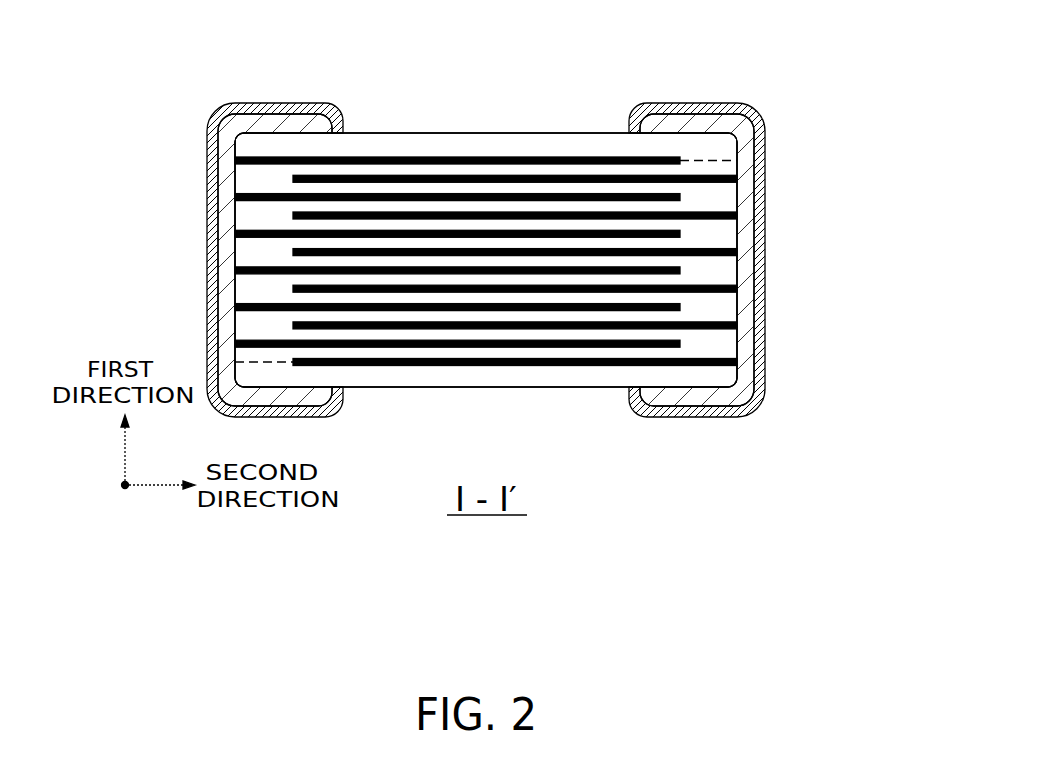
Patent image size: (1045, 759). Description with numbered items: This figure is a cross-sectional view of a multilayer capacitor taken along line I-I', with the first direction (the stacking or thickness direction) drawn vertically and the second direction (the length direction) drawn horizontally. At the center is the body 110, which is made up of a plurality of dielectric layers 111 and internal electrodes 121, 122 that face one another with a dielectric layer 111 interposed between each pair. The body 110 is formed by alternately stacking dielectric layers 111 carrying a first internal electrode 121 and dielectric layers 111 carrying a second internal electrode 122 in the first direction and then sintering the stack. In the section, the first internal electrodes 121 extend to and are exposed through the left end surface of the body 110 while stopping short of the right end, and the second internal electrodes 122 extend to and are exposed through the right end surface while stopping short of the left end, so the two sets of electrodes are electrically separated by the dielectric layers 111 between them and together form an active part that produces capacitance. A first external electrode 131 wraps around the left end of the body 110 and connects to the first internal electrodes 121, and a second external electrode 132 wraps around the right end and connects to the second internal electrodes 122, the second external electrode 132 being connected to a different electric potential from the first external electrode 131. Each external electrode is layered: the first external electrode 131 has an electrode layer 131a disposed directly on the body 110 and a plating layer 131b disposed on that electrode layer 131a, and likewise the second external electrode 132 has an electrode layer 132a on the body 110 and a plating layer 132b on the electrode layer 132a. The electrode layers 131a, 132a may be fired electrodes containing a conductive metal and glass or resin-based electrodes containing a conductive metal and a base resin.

The body 110 is at (415, 133).
The dielectric layer 111 is at (363, 207).
The first internal electrode 121 is at (558, 162).
The second internal electrode 122 is at (623, 180).
The first external electrode 131 is at (192, 260).
The electrode layer 131a is at (226, 184).
The plating layer 131b is at (214, 212).
The second external electrode 132 is at (779, 260).
The electrode layer 132a is at (747, 160).
The plating layer 132b is at (760, 188).